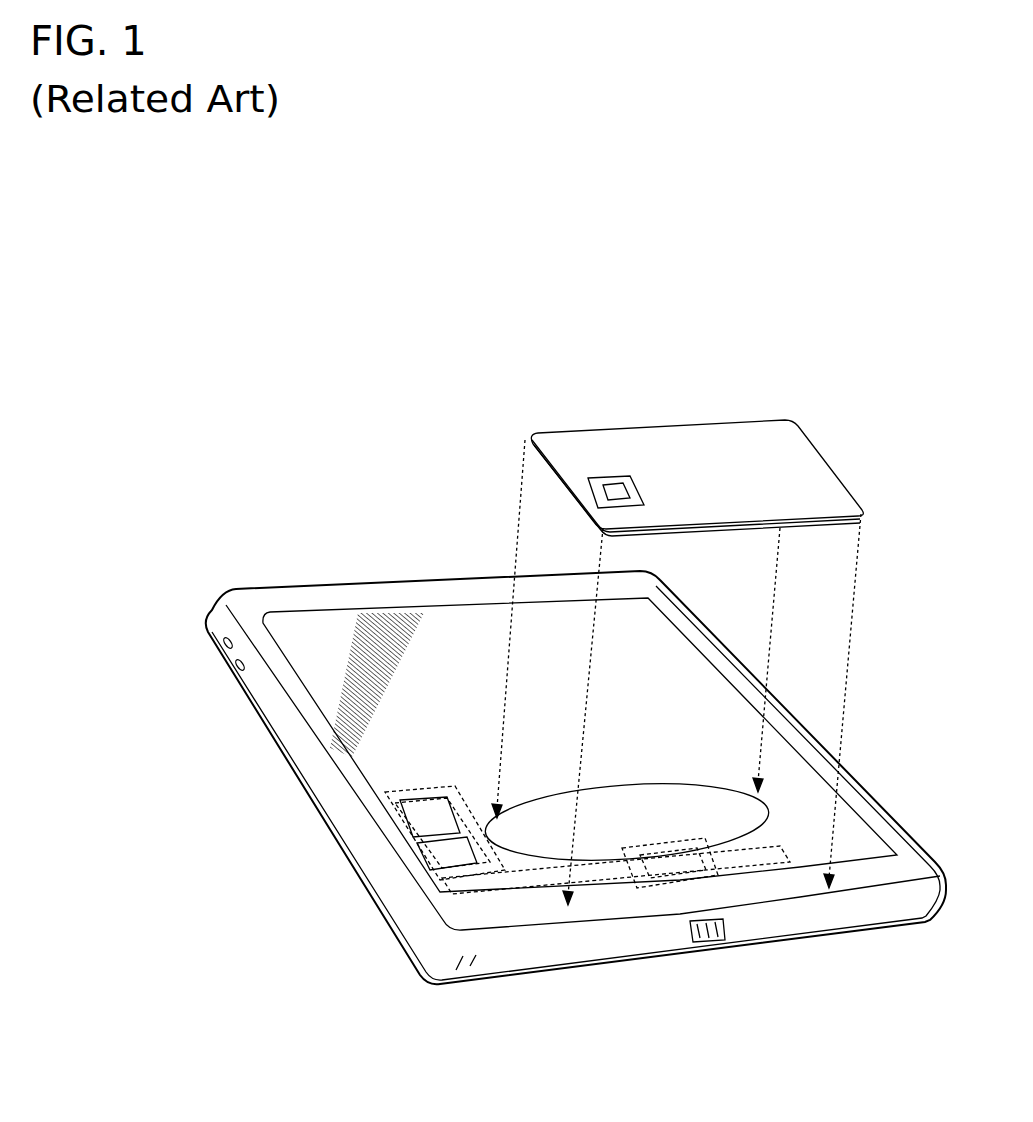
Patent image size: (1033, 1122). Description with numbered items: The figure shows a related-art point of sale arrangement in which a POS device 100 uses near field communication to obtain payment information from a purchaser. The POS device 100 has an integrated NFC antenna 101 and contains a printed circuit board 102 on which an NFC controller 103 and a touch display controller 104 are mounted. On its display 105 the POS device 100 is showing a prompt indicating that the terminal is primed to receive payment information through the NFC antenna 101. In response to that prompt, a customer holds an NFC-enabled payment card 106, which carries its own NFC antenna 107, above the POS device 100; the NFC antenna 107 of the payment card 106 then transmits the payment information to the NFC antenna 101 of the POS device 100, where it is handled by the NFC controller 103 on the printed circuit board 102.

The POS device 100 is at (205, 632).
The NFC antenna 101 is at (655, 900).
The printed circuit board 102 is at (387, 800).
The NFC controller 103 is at (450, 864).
The touch display controller 104 is at (440, 815).
The display 105 is at (322, 626).
The NFC-enabled payment card 106 is at (565, 440).
The NFC antenna 107 is at (615, 478).